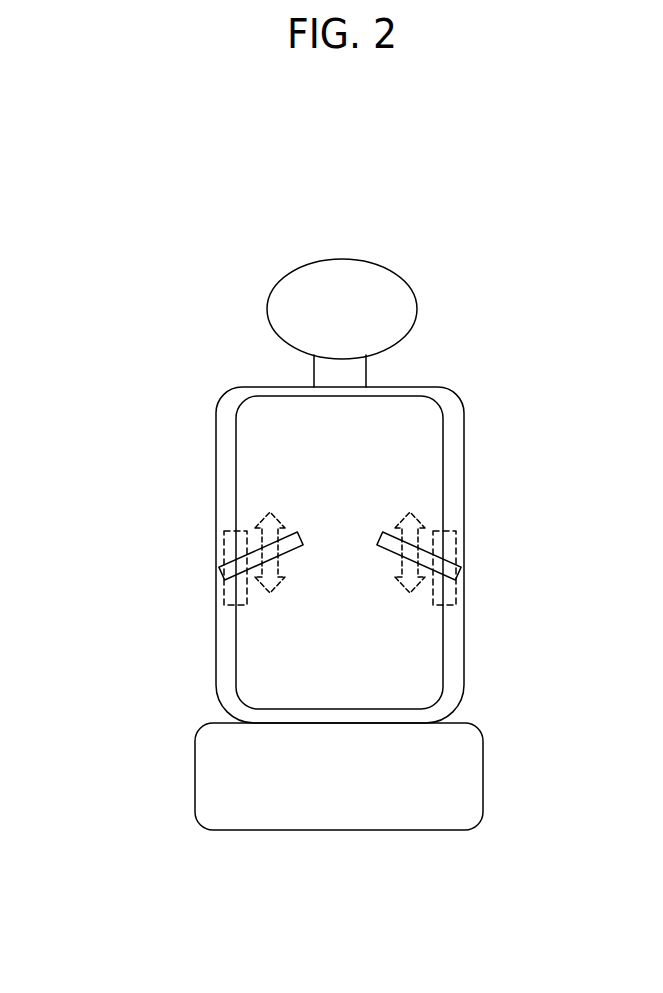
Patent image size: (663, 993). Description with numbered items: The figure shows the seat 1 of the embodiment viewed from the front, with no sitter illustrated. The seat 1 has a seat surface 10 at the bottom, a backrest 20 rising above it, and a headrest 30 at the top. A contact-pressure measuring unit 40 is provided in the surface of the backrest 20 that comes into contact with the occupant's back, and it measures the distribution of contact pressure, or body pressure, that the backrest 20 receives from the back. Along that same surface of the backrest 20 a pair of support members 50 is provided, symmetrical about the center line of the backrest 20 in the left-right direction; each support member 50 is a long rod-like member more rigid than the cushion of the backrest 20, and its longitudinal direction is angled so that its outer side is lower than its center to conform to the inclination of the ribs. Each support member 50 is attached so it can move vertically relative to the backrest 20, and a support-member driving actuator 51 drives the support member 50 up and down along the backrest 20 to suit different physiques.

The seat 1 is at (178, 236).
The seat surface 10 is at (195, 783).
The backrest 20 is at (216, 435).
The headrest 30 is at (315, 262).
The contact-pressure measuring unit 40 is at (236, 510).
The support member 50 is at (393, 560).
The support-member driving actuator 51 is at (456, 547).